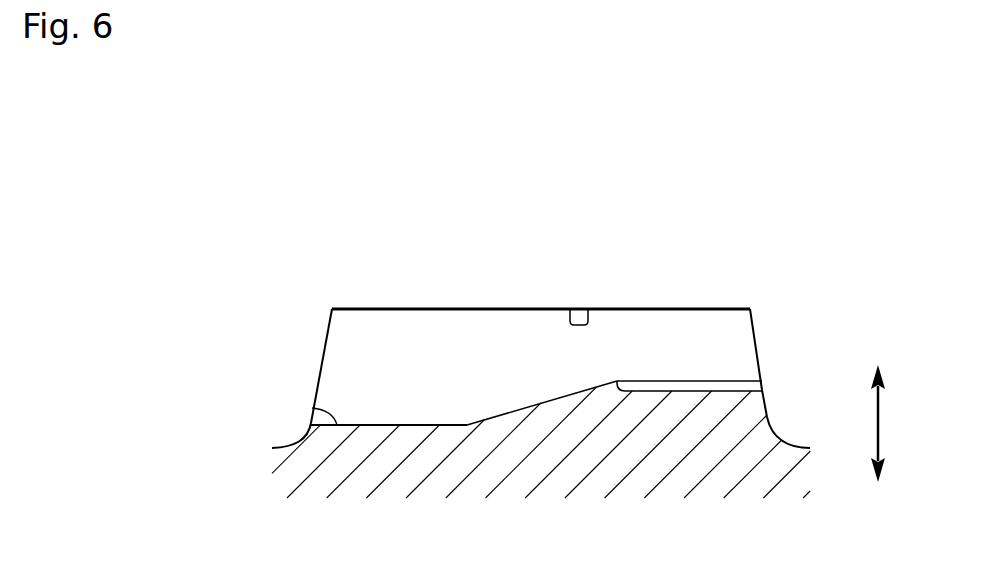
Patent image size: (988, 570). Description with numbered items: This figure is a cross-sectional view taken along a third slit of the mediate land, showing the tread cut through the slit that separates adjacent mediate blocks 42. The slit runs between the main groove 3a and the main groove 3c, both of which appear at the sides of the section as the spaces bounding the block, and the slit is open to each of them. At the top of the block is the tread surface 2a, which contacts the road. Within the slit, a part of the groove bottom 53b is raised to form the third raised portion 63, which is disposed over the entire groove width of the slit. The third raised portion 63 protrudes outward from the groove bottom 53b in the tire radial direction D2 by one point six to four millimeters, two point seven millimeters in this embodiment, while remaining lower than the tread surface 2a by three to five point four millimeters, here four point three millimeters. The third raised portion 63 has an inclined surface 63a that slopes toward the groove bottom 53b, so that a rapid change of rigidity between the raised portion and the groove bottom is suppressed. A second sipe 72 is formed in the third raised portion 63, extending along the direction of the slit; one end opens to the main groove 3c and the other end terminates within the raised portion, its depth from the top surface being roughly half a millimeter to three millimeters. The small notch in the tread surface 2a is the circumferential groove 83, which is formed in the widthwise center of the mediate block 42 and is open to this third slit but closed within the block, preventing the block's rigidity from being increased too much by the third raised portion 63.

The tread surface 2a is at (497, 312).
The main groove 3a is at (293, 343).
The main groove 3c is at (797, 343).
The mediate block 42 is at (530, 307).
The groove bottom 53b is at (312, 408).
The third raised portion 63 is at (665, 378).
The inclined surface 63a is at (550, 400).
The second sipe 72 is at (686, 323).
The circumferential groove 83 is at (580, 313).
The tire radial direction D2 is at (891, 423).